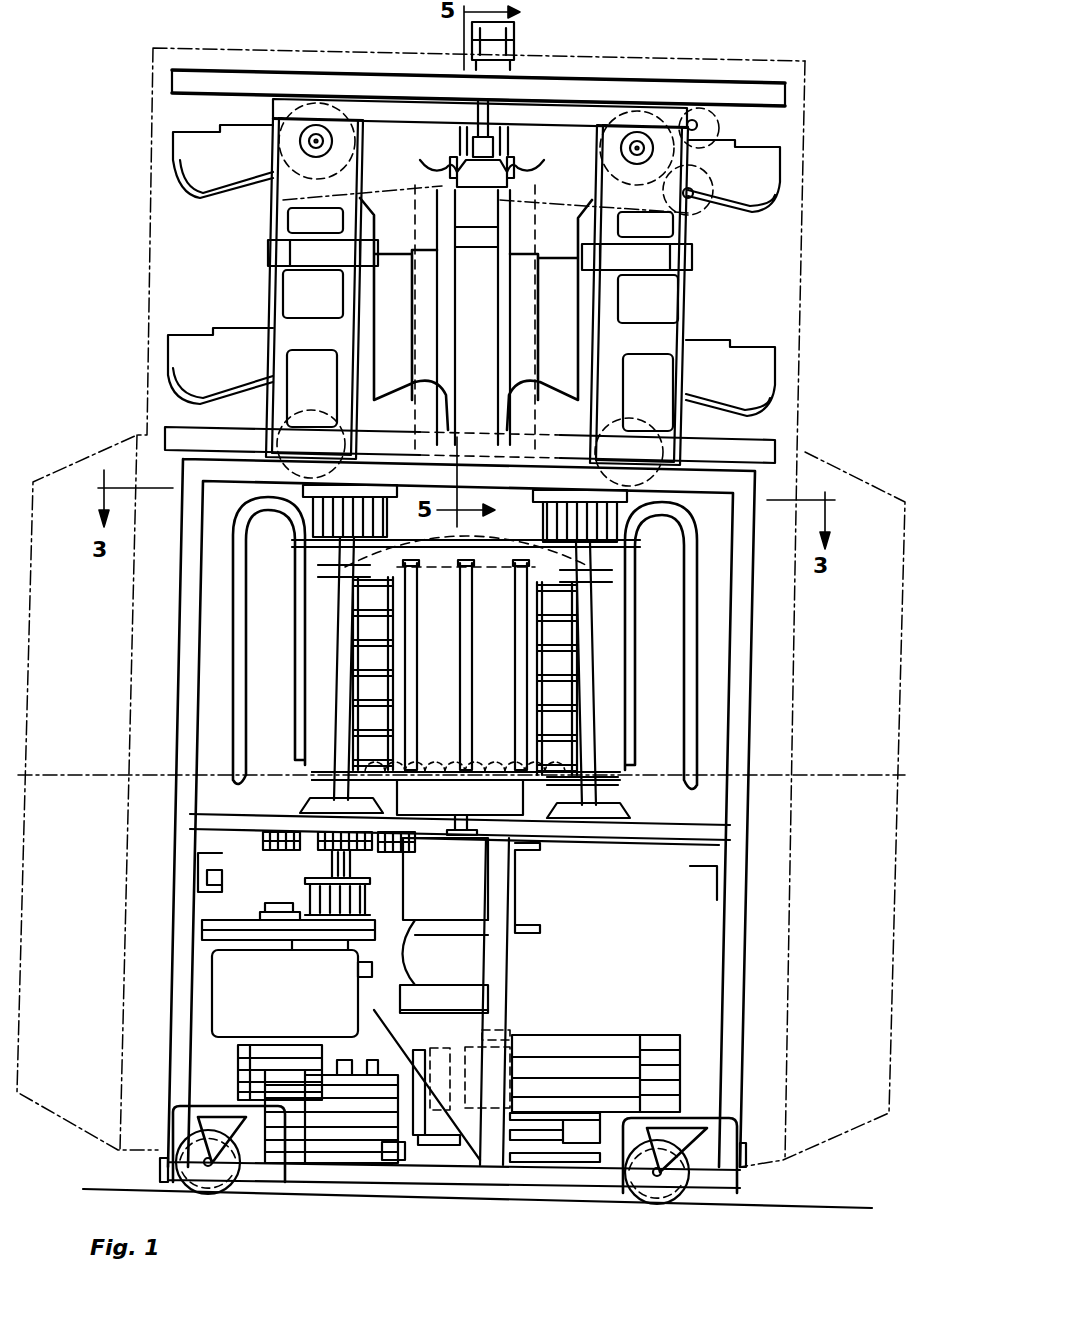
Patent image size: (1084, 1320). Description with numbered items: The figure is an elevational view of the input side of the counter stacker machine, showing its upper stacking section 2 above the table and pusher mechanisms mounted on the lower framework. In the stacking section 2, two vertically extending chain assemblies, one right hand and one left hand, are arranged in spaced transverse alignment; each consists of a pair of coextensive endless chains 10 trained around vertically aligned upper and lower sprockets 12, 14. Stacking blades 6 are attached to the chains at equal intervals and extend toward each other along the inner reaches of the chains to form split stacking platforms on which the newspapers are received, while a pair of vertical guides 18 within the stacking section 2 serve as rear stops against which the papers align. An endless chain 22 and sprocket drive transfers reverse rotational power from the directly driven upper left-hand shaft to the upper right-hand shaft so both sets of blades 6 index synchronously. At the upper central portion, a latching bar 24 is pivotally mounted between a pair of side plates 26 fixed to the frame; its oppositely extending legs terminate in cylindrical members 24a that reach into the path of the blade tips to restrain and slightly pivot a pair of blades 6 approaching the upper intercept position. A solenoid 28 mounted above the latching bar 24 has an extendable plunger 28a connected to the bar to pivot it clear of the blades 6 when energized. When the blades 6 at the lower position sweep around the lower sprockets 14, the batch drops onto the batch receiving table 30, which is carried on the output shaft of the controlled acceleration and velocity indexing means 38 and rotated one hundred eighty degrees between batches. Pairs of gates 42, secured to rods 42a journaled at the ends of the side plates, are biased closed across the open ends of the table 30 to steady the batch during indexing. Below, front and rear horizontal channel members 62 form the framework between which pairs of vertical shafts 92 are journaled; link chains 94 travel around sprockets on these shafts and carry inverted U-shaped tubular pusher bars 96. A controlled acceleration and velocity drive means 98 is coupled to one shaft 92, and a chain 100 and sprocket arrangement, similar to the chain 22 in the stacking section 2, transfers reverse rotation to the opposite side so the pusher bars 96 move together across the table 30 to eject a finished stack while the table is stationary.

The upper stacking section 2 is at (482, 340).
The stacking blades 6 is at (180, 146).
The endless chains 10 is at (273, 284).
The upper sprockets 12 is at (318, 103).
The lower sprockets 14 is at (309, 416).
The vertical guides 18 is at (510, 280).
The endless chain 22 is at (290, 178).
The latching bar 24 is at (482, 173).
The cylindrical members 24a is at (420, 168).
The side plates 26 is at (460, 135).
The solenoid 28 is at (514, 40).
The extendable plunger 28a is at (490, 125).
The batch receiving table 30 is at (449, 680).
The controlled acceleration and velocity indexing means 38 is at (460, 891).
The gates 42 is at (358, 708).
The rods 42a is at (390, 602).
The horizontal channel members 62 is at (665, 833).
The vertical shafts 92 is at (345, 622).
The link chains 94 is at (503, 787).
The pusher bars 96 is at (258, 592).
The controlled acceleration and velocity drive means 98 is at (286, 1012).
The chain 100 is at (313, 843).